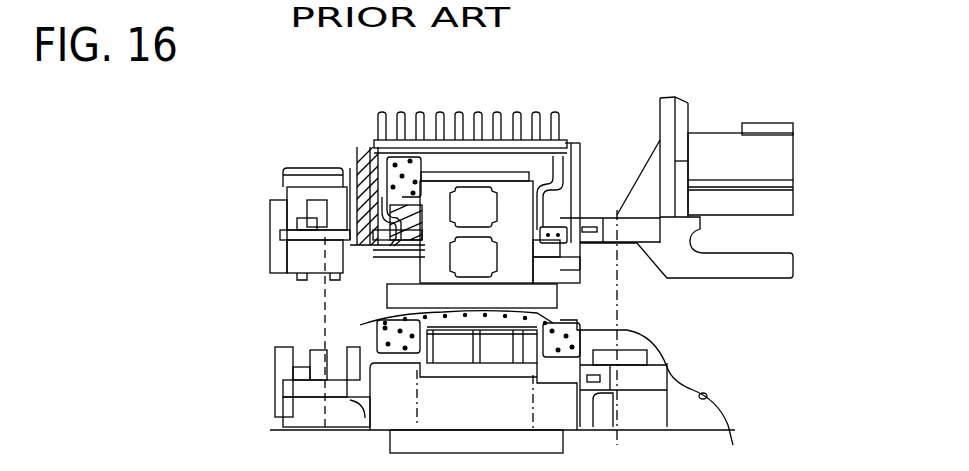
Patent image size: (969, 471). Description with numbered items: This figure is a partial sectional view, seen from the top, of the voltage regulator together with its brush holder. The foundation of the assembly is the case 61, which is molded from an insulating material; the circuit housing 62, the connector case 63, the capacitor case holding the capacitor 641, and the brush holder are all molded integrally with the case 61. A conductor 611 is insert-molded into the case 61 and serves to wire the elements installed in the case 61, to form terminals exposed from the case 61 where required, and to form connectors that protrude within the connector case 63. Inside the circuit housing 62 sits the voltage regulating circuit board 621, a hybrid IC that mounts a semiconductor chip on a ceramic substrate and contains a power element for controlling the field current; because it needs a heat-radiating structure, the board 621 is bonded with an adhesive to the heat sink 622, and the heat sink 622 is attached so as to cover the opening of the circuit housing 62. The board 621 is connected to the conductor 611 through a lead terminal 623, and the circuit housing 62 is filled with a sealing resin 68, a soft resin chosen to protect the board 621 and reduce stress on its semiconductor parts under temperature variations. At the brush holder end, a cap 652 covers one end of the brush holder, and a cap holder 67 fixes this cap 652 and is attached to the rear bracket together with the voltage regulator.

The case 61 is at (592, 221).
The circuit housing 62 is at (577, 158).
The connector case 63 is at (753, 150).
The cap holder 67 is at (555, 400).
The sealing resin 68 is at (355, 148).
The conductor 611 is at (395, 257).
The voltage regulating circuit board 621 is at (385, 157).
The heat sink 622 is at (478, 123).
The lead terminal 623 is at (352, 162).
The capacitor 641 is at (297, 191).
The cap 652 is at (517, 263).